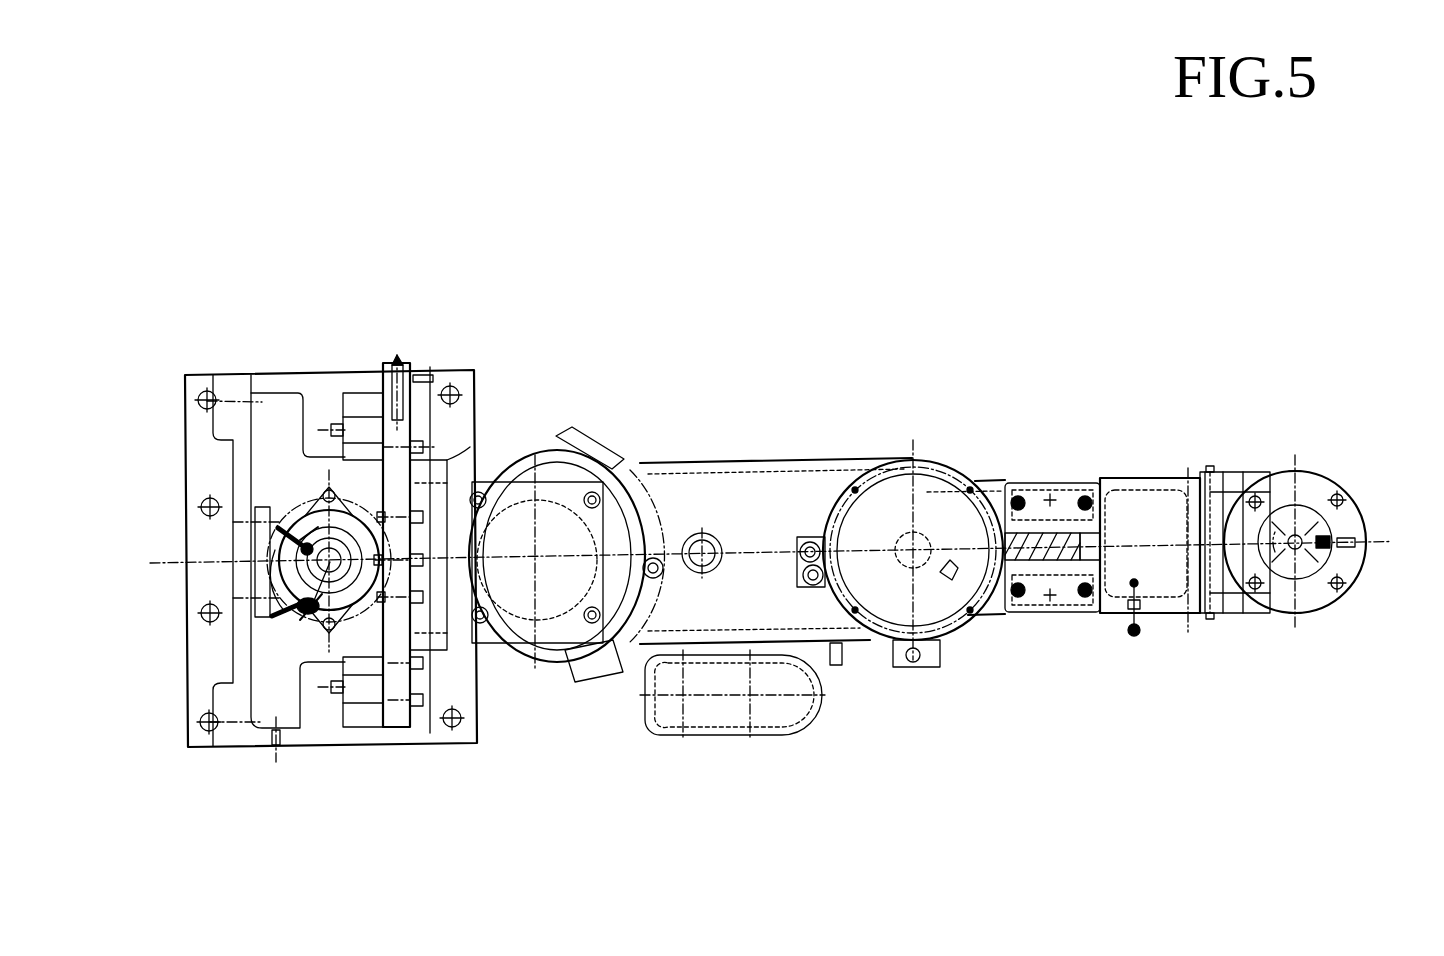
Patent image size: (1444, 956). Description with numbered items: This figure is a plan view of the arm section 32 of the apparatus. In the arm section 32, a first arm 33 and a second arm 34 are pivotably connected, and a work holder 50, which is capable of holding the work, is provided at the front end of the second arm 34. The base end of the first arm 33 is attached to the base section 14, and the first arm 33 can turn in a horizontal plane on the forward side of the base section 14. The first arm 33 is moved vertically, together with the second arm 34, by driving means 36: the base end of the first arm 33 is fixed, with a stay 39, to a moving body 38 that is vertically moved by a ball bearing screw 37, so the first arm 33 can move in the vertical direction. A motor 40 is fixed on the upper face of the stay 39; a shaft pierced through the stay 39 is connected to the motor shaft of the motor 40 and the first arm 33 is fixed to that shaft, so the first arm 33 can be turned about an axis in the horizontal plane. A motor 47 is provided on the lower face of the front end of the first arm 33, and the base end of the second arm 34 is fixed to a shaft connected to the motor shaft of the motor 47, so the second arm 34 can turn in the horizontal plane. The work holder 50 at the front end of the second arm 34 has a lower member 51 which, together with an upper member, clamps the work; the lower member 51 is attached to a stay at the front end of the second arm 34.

The base section 14 is at (250, 380).
The arm section 32 is at (745, 518).
The first arm 33 is at (724, 495).
The second arm 34 is at (1137, 485).
The driving means 36 is at (290, 483).
The ball bearing screw 37 is at (313, 613).
The moving body 38 is at (400, 483).
The stay 39 is at (430, 640).
The motor 40 is at (555, 527).
The motor 47 is at (942, 508).
The work holder 50 is at (1314, 531).
The lower member 51 is at (1320, 593).